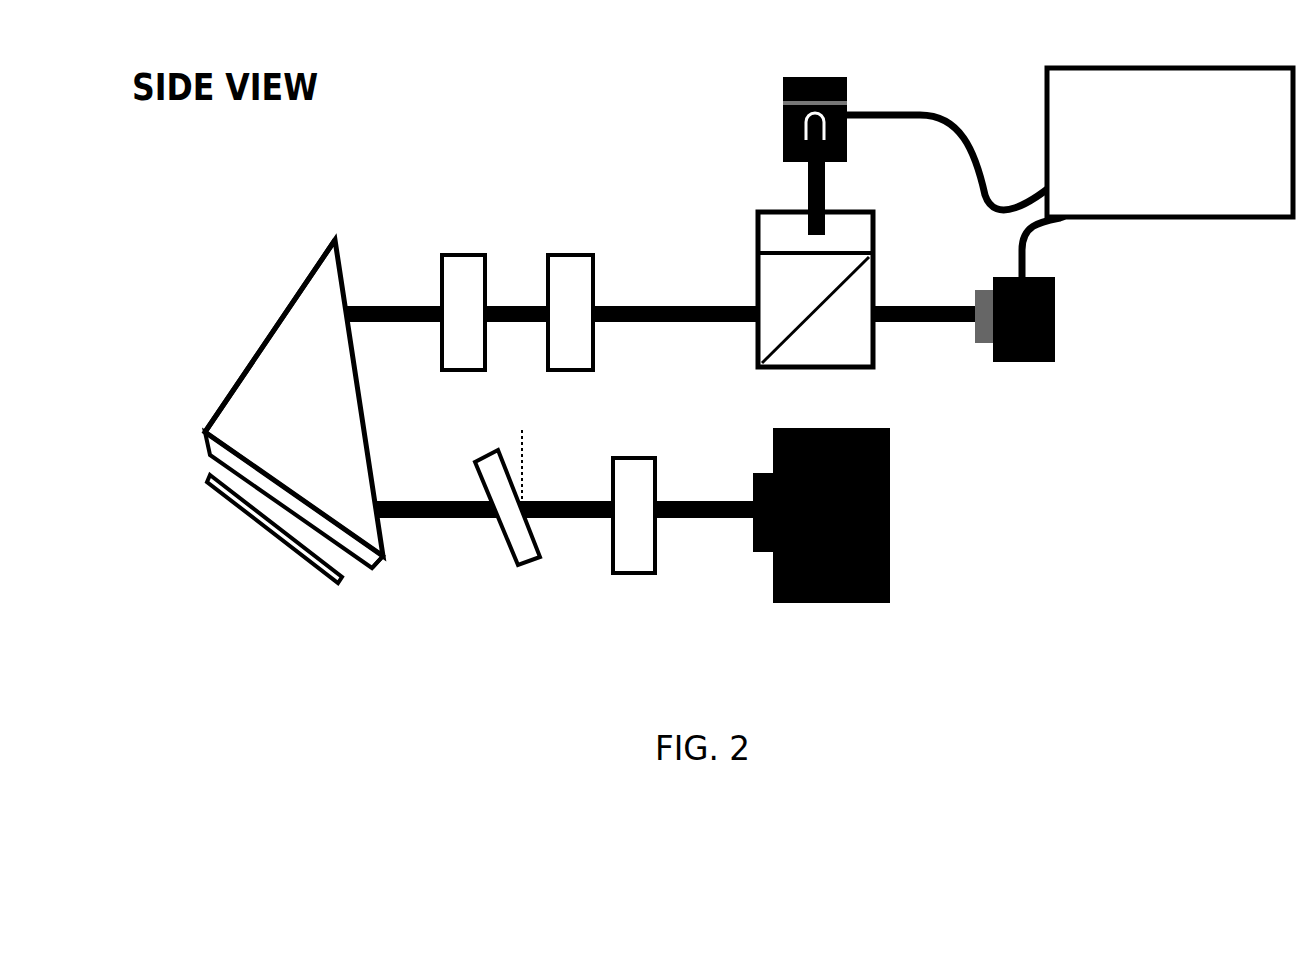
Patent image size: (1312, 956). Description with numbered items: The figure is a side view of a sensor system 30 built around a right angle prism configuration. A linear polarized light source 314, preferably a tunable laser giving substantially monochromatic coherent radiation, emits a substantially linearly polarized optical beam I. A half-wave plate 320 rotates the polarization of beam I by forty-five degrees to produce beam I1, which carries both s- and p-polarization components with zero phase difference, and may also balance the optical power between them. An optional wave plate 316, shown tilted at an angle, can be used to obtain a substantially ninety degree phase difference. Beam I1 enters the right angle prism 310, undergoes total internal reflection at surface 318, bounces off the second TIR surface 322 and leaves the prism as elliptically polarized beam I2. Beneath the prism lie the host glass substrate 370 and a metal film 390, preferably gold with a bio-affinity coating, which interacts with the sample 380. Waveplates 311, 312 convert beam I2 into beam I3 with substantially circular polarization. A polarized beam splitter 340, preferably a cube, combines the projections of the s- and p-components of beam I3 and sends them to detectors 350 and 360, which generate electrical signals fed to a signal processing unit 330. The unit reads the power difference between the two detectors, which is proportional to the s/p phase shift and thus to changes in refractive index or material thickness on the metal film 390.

The sensor system 30 is at (996, 584).
The right angle prism 310 is at (380, 422).
The waveplate 311 is at (464, 285).
The waveplate 312 is at (575, 285).
The linear polarized light source 314 is at (856, 515).
The wave plate 316 is at (509, 517).
The TIR surface 318 is at (380, 576).
The half-wave plate 320 is at (631, 542).
The second TIR surface 322 is at (284, 295).
The signal processing unit 330 is at (1215, 233).
The polarized beam splitter 340 is at (775, 289).
The detector 350 is at (882, 156).
The detector 360 is at (1053, 278).
The host glass substrate 370 is at (196, 450).
The sample 380 is at (206, 527).
The metal film 390 is at (314, 574).
The optical beam I is at (705, 533).
The beam I1 is at (572, 532).
The beam I2 is at (386, 296).
The beam I3 is at (648, 292).